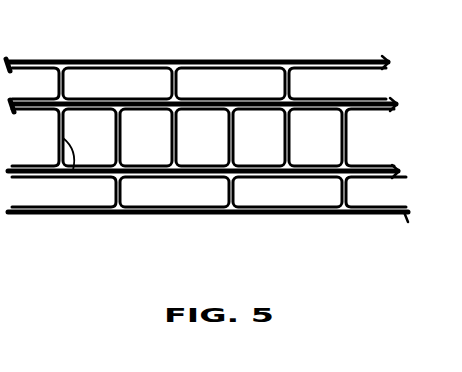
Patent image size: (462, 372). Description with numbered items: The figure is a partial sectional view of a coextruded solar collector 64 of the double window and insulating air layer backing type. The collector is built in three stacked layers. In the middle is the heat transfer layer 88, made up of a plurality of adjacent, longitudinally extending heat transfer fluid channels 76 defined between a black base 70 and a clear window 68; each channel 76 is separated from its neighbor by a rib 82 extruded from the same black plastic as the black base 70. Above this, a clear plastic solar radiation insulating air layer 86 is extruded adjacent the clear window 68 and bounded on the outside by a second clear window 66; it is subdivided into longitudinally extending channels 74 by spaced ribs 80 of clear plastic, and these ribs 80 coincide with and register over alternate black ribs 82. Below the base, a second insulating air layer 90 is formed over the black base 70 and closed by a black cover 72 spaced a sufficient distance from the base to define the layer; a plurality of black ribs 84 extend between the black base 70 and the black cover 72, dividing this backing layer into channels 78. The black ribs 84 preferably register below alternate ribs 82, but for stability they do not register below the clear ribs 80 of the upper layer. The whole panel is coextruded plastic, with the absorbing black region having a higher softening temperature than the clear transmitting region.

The modified solar collector 64 is at (223, 140).
The clear window 66 is at (251, 63).
The clear window 68 is at (303, 100).
The black base 70 is at (370, 165).
The black cover 72 is at (371, 213).
The longitudinally extending channels 74 is at (128, 80).
The heat transfer fluid channels 76 is at (202, 150).
The channels 78 is at (282, 197).
The spaced ribs 80 is at (64, 88).
The rib 82 is at (78, 171).
The black ribs 84 is at (116, 192).
The insulating air layer 86 is at (232, 82).
The heat transfer layer 88 is at (365, 135).
The second insulating air layer 90 is at (381, 197).